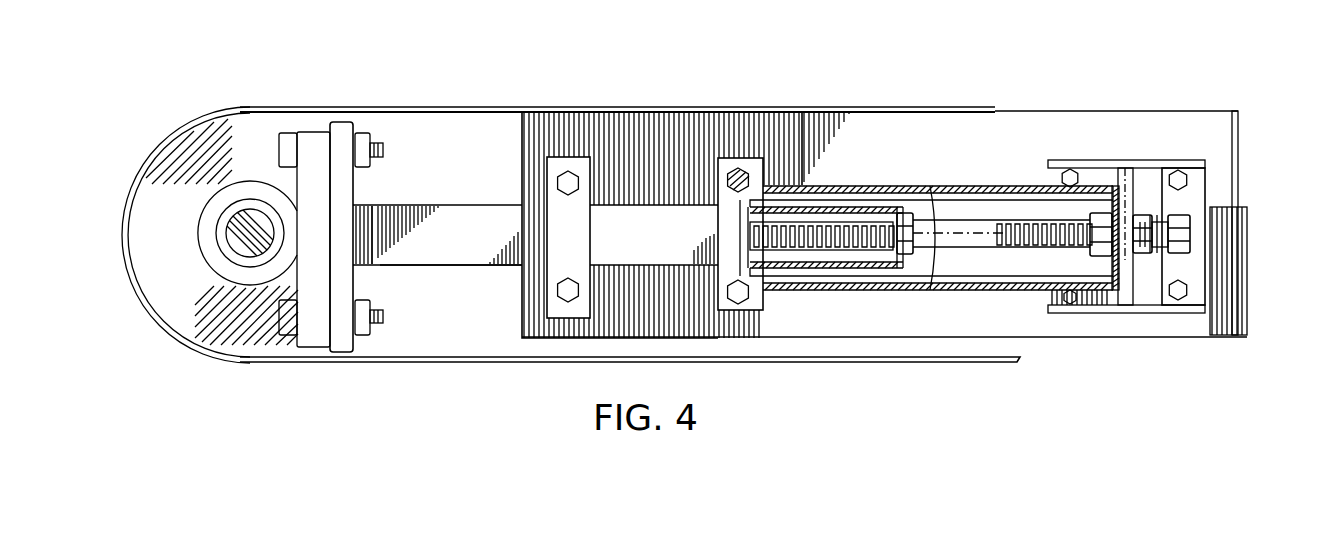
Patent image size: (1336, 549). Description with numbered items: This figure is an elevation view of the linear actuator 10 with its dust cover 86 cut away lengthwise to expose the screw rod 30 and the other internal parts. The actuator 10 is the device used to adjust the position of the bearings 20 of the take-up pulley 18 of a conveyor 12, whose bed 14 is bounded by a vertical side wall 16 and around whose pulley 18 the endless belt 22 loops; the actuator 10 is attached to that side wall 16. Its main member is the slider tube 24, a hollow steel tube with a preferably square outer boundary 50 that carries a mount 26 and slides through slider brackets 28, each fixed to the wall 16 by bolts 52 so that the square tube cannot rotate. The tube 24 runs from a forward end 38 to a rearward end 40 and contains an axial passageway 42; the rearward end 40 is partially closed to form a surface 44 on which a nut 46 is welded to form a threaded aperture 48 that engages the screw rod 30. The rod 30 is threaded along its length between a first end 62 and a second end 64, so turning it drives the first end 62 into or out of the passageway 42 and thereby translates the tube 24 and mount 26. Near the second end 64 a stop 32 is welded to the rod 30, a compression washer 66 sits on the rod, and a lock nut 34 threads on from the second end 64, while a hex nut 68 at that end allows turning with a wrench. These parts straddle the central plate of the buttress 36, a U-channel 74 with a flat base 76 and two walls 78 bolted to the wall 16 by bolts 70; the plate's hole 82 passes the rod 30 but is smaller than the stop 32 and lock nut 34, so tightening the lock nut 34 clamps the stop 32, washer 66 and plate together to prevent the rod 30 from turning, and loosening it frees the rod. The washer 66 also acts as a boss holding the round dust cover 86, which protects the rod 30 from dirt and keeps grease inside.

The linear actuator 10 is at (397, 200).
The conveyor 12 is at (413, 100).
The bed 14 is at (1100, 111).
The side wall 16 is at (659, 314).
The take-up pulley 18 is at (168, 249).
The bearings 20 is at (318, 277).
The endless belt 22 is at (443, 364).
The slider tube 24 is at (650, 245).
The mount 26 is at (338, 353).
The slider brackets 28 is at (585, 166).
The screw rod 30 is at (1043, 203).
The stop 32 is at (1097, 212).
The lock nut 34 is at (1150, 214).
The buttress 36 is at (1090, 314).
The forward end 38 is at (374, 250).
The rearward end 40 is at (848, 223).
The axial passageway 42 is at (810, 218).
The surface 44 is at (923, 189).
The nut 46 is at (908, 213).
The threaded aperture 48 is at (926, 226).
The outer boundary 50 is at (412, 266).
The bolts 52 is at (557, 183).
The first end 62 is at (780, 212).
The second end 64 is at (1244, 258).
The compression washer 66 is at (1128, 270).
The hex nut 68 is at (1190, 223).
The bolts 70 is at (1075, 170).
The U-channel 74 is at (1158, 250).
The flat base 76 is at (1175, 200).
The walls 78 is at (1192, 157).
The hole 82 is at (1130, 170).
The dust cover 86 is at (981, 244).